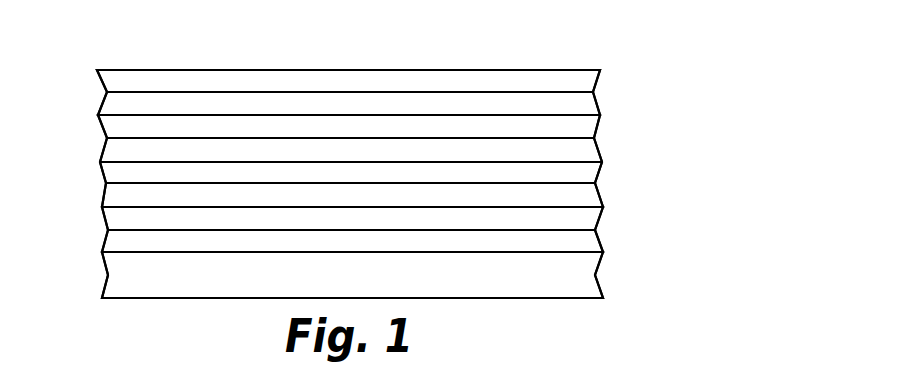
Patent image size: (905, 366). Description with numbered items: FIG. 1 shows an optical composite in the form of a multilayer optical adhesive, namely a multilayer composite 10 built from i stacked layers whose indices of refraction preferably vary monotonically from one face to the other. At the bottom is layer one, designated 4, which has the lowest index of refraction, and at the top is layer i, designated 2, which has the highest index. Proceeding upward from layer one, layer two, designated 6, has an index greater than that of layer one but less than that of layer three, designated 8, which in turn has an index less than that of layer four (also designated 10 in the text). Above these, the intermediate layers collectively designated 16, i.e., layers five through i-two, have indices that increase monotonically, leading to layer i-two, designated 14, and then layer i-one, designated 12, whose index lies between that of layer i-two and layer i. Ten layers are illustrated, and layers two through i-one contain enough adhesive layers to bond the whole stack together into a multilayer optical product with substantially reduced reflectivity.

The multilayer composite 10 is at (516, 47).
The layer i 2 is at (101, 81).
The layer i-1 12 is at (102, 107).
The layer i-2 14 is at (105, 133).
The intermediate layers 16 is at (606, 133).
The layer 3 8 is at (105, 243).
The layer 2 6 is at (110, 267).
The layer 1 4 is at (104, 295).